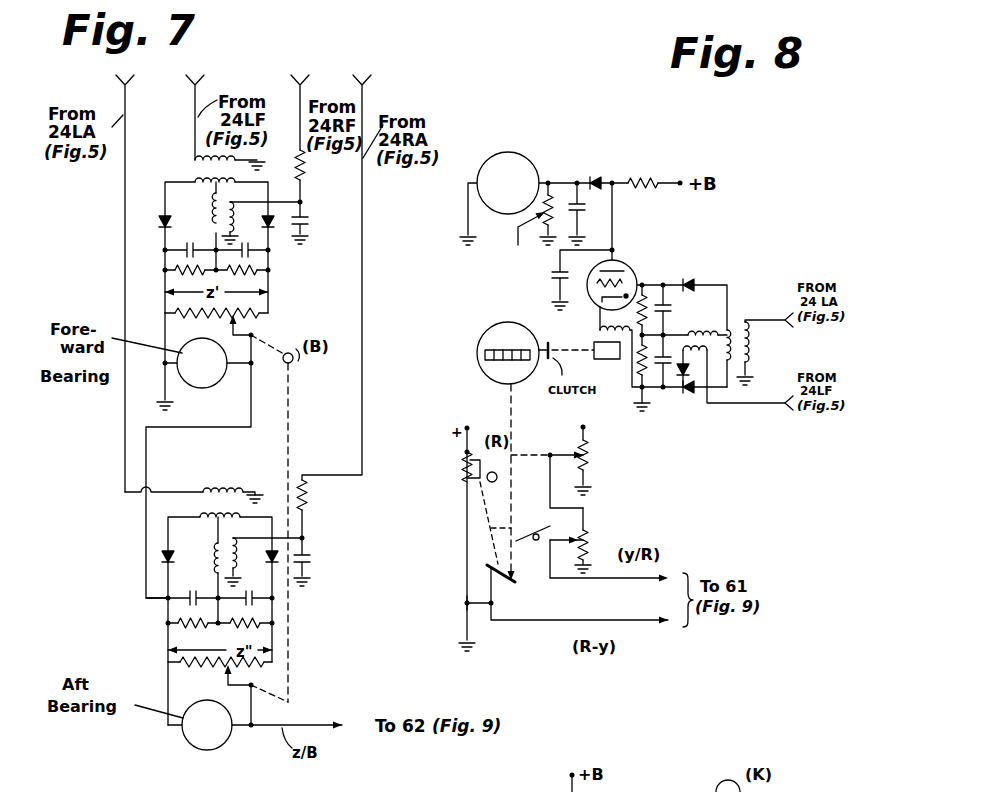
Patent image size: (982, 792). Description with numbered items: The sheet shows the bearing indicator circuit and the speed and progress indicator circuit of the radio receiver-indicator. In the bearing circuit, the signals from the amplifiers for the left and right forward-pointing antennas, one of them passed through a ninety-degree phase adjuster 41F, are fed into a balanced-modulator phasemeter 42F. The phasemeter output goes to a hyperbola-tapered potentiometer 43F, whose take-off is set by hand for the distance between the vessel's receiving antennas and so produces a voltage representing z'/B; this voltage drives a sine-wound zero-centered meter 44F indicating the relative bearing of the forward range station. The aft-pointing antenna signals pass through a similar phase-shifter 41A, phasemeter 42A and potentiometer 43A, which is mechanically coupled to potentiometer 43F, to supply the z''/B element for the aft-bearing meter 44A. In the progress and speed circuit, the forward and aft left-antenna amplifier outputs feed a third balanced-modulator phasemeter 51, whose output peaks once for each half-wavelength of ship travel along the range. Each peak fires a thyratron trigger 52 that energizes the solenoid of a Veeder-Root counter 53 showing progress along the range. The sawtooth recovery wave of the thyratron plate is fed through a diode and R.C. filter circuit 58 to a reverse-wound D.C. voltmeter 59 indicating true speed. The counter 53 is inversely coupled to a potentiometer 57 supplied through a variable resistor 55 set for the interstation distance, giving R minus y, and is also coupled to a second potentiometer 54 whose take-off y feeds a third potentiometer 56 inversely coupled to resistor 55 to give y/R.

In FIG. 7, the phase adjuster 41F is at (303, 203).
In FIG. 7, the balanced-modulator phasemeter 42F is at (210, 206).
In FIG. 7, the hyperbola-tapered potentiometer 43F is at (262, 326).
In FIG. 7, the sine-wound zero-centered meter 44F is at (216, 388).
In FIG. 7, the phase-shifter 41A is at (305, 538).
In FIG. 7, the phasemeter 42A is at (214, 540).
In FIG. 7, the potentiometer 43A is at (220, 659).
In FIG. 7, the aft-bearing meter 44A is at (213, 749).
In FIG. 8, the third balanced-modulator phasemeter 51 is at (705, 321).
In FIG. 8, the thyratron trigger 52 is at (630, 270).
In FIG. 8, the Veeder-Root counter 53 is at (506, 322).
In FIG. 8, the second potentiometer 54 is at (587, 462).
In FIG. 8, the variable resistor 55 is at (460, 456).
In FIG. 8, the third potentiometer 56 is at (587, 546).
In FIG. 8, the potentiometer 57 is at (462, 602).
In FIG. 8, the diode and R.C. filter circuit 58 is at (530, 224).
In FIG. 8, the D.C. voltmeter 59 is at (525, 160).